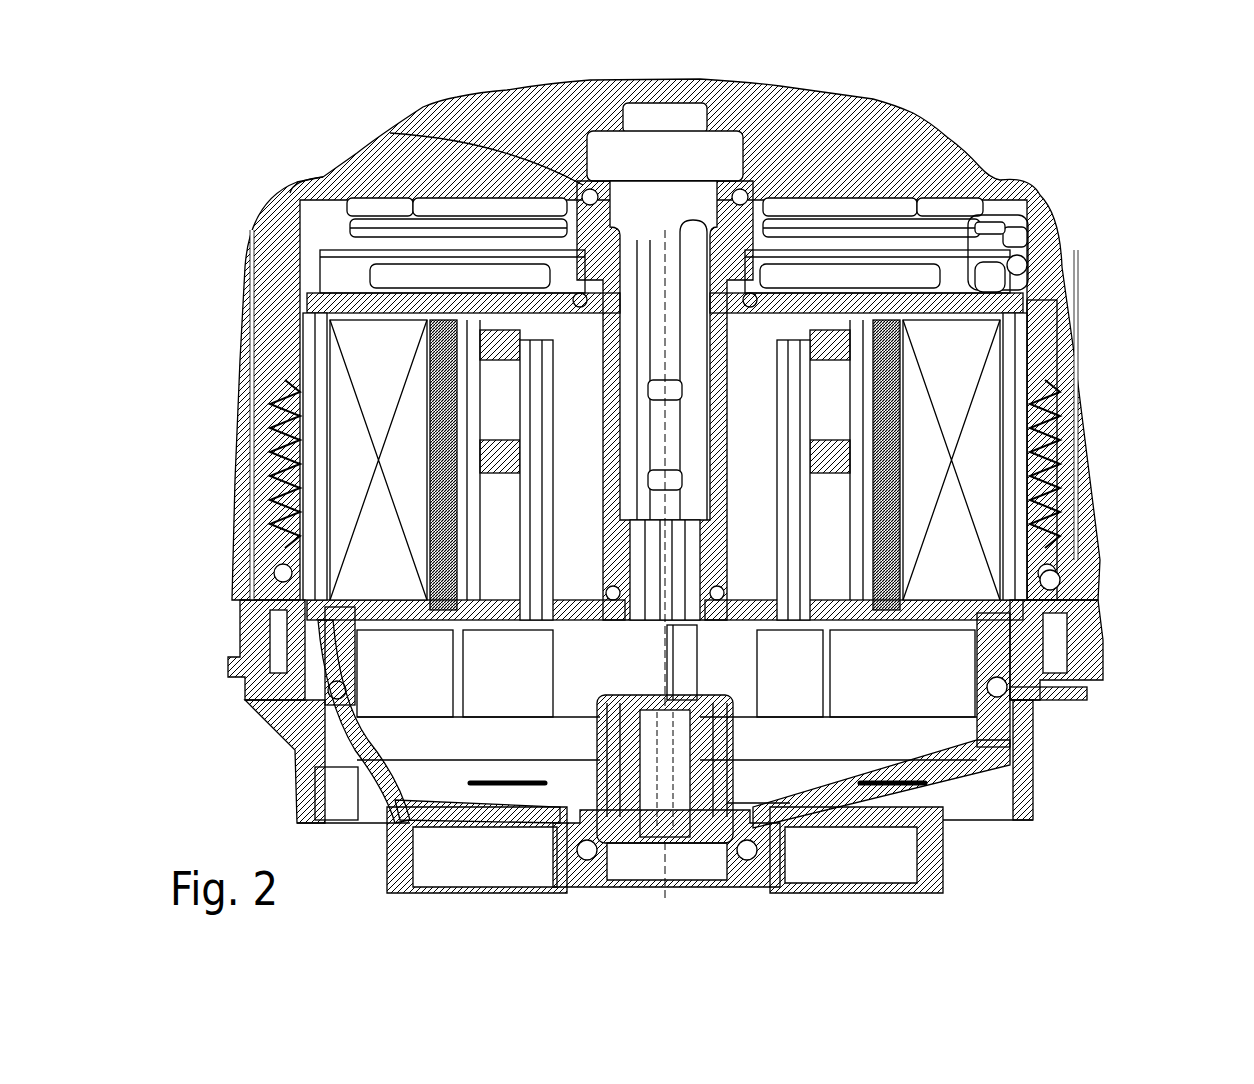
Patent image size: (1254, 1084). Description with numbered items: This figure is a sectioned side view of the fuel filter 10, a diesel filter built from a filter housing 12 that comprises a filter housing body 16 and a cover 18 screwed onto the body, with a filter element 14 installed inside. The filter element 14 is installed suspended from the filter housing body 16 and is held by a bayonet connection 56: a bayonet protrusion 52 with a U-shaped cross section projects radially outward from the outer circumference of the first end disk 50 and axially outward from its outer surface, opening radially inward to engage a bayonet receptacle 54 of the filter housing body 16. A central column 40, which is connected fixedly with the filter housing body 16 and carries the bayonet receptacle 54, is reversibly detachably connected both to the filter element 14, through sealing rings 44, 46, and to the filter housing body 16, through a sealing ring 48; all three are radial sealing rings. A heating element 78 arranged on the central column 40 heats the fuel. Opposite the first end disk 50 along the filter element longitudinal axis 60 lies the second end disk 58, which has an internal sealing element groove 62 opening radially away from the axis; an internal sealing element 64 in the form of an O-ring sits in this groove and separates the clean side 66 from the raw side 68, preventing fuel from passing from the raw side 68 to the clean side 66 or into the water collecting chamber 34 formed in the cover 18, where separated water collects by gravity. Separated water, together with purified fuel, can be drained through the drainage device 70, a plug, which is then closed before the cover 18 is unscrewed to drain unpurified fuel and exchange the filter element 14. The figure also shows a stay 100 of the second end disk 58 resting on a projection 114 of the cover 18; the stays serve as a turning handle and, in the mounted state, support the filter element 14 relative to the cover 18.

The filter 10 is at (1110, 126).
The filter housing 12 is at (1005, 122).
The filter element 14 is at (325, 427).
The filter housing body 16 is at (283, 288).
The cover 18 is at (1035, 785).
The water collecting chamber 34 is at (955, 740).
The central column 40 is at (600, 421).
The sealing ring 44 is at (585, 335).
The sealing ring 46 is at (595, 600).
The sealing ring 48 is at (400, 133).
The first end disk 50 is at (1030, 308).
The bayonet protrusion 52 is at (1012, 298).
The bayonet receptacle 54 is at (1005, 268).
The bayonet connection 56 is at (1158, 172).
The second end disk 58 is at (1010, 640).
The filter element longitudinal axis 60 is at (697, 685).
The internal sealing element groove 62 is at (1040, 700).
The internal sealing element 64 is at (1095, 667).
The clean side 66 is at (853, 660).
The raw side 68 is at (1015, 469).
The drainage device 70 is at (627, 695).
The heating element 78 is at (965, 225).
The stay 100 is at (455, 690).
The projection 114 is at (460, 705).